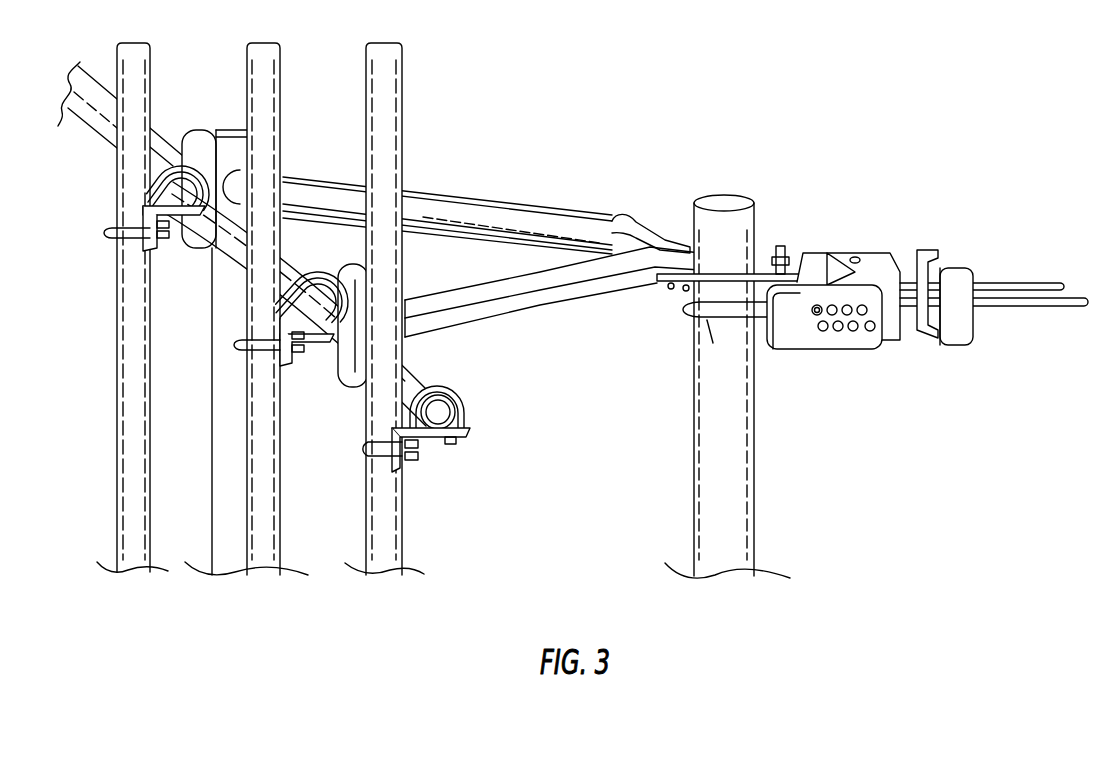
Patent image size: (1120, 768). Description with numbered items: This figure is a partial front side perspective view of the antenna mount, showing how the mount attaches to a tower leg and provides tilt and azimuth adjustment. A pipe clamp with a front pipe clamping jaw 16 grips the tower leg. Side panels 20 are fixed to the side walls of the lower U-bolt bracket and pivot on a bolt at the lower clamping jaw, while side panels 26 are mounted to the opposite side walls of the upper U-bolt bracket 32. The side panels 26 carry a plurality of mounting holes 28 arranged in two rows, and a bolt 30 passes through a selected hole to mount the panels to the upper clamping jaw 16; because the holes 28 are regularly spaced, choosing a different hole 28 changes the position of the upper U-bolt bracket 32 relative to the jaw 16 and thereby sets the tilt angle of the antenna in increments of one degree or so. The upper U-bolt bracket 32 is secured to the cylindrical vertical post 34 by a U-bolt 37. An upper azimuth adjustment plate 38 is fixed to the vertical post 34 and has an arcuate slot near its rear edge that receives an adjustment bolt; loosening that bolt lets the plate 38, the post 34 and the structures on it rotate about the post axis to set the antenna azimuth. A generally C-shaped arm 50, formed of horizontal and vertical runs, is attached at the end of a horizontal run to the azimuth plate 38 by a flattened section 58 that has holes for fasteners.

The front pipe clamping jaw 16 is at (876, 250).
The side panel 20 is at (813, 260).
The side panel 26 is at (848, 350).
The mounting hole 28 is at (878, 350).
The bolt 30 is at (818, 316).
The upper U-bolt bracket 32 is at (785, 350).
The vertical post 34 is at (745, 534).
The U-bolt 37 is at (693, 345).
The upper azimuth adjustment plate 38 is at (667, 283).
The C-shaped arm 50 is at (572, 228).
The flattened section 58 is at (667, 235).